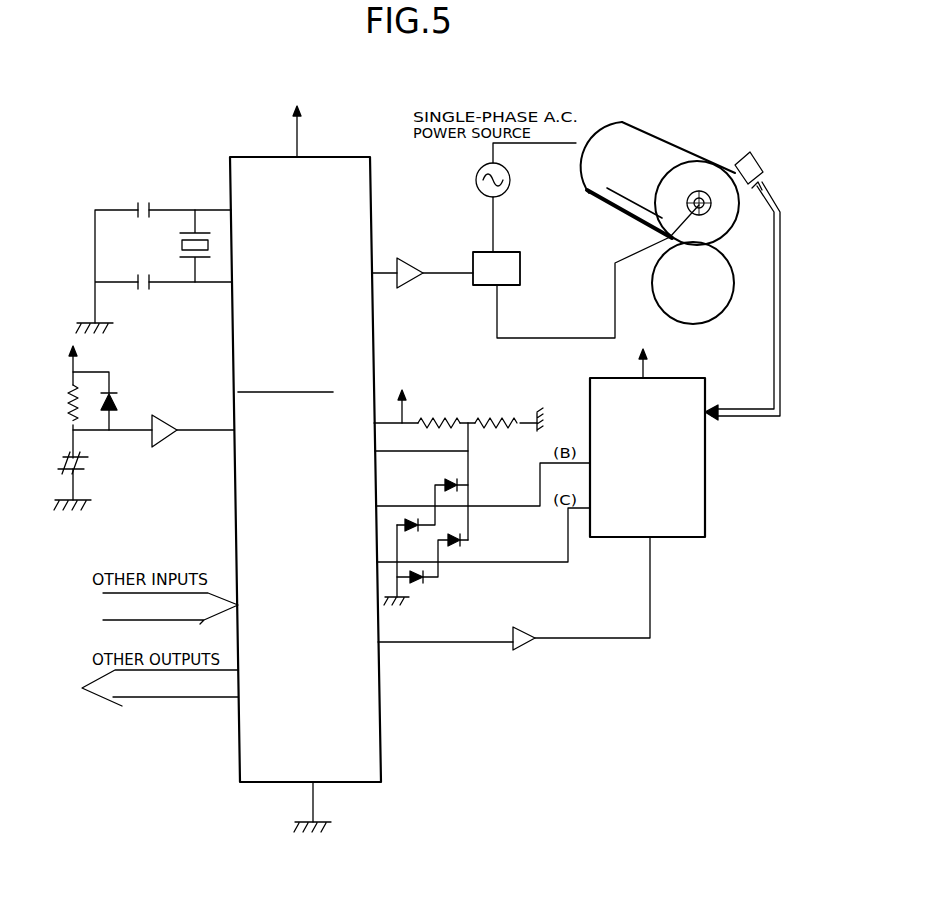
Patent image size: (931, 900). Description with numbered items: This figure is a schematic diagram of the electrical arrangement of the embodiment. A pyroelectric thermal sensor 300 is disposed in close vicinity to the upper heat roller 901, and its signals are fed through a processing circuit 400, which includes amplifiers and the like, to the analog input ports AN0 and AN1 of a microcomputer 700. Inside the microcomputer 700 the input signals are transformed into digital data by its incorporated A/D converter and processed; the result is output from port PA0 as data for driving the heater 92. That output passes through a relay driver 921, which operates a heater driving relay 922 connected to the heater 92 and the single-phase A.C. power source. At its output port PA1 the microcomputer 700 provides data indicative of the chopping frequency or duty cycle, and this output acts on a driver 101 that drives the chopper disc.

The microcomputer 700 is at (381, 713).
The processing circuit 400 is at (705, 478).
The upper heat roller 901 is at (668, 140).
The heater 92 is at (712, 207).
The pyroelectric thermal sensor 300 is at (760, 148).
The relay driver 921 is at (409, 262).
The heater driving relay 922 is at (518, 285).
The driver 101 is at (543, 665).